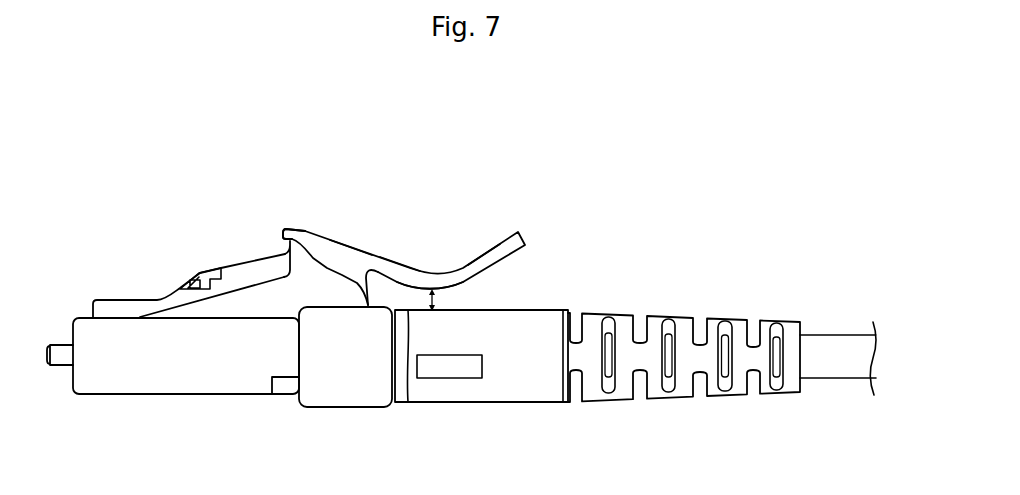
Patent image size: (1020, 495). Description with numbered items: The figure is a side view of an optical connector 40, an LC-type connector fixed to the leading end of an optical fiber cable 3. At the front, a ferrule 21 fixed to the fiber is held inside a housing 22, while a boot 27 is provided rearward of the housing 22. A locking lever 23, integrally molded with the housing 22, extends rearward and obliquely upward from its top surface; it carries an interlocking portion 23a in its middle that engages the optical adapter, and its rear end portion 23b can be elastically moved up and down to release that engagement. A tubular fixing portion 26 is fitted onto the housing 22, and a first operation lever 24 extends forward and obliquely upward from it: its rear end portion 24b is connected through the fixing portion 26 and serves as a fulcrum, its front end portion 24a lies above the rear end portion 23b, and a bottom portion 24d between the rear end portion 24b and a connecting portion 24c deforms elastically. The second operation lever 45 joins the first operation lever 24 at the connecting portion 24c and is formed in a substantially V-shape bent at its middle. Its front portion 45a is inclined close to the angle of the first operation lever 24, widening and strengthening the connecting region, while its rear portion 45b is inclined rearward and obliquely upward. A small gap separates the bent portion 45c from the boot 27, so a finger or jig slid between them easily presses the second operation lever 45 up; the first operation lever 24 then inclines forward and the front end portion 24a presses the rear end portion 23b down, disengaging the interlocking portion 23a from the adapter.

The optical fiber cable 3 is at (836, 346).
The ferrule 21 is at (58, 350).
The housing 22 is at (190, 378).
The locking lever 23 is at (191, 247).
The interlocking portion 23a is at (221, 266).
The rear end portion 23b is at (267, 252).
The first operation lever 24 is at (351, 308).
The front end portion 24a is at (291, 229).
The rear end portion 24b is at (408, 402).
The connecting portion 24c is at (338, 252).
The bottom portion 24d is at (360, 287).
The fixing portion 26 is at (358, 392).
The boot 27 is at (520, 385).
The optical connector 40 is at (421, 221).
The second operation lever 45 is at (421, 241).
The front portion 45a is at (393, 268).
The rear portion 45b is at (478, 262).
The bent portion 45c is at (443, 283).